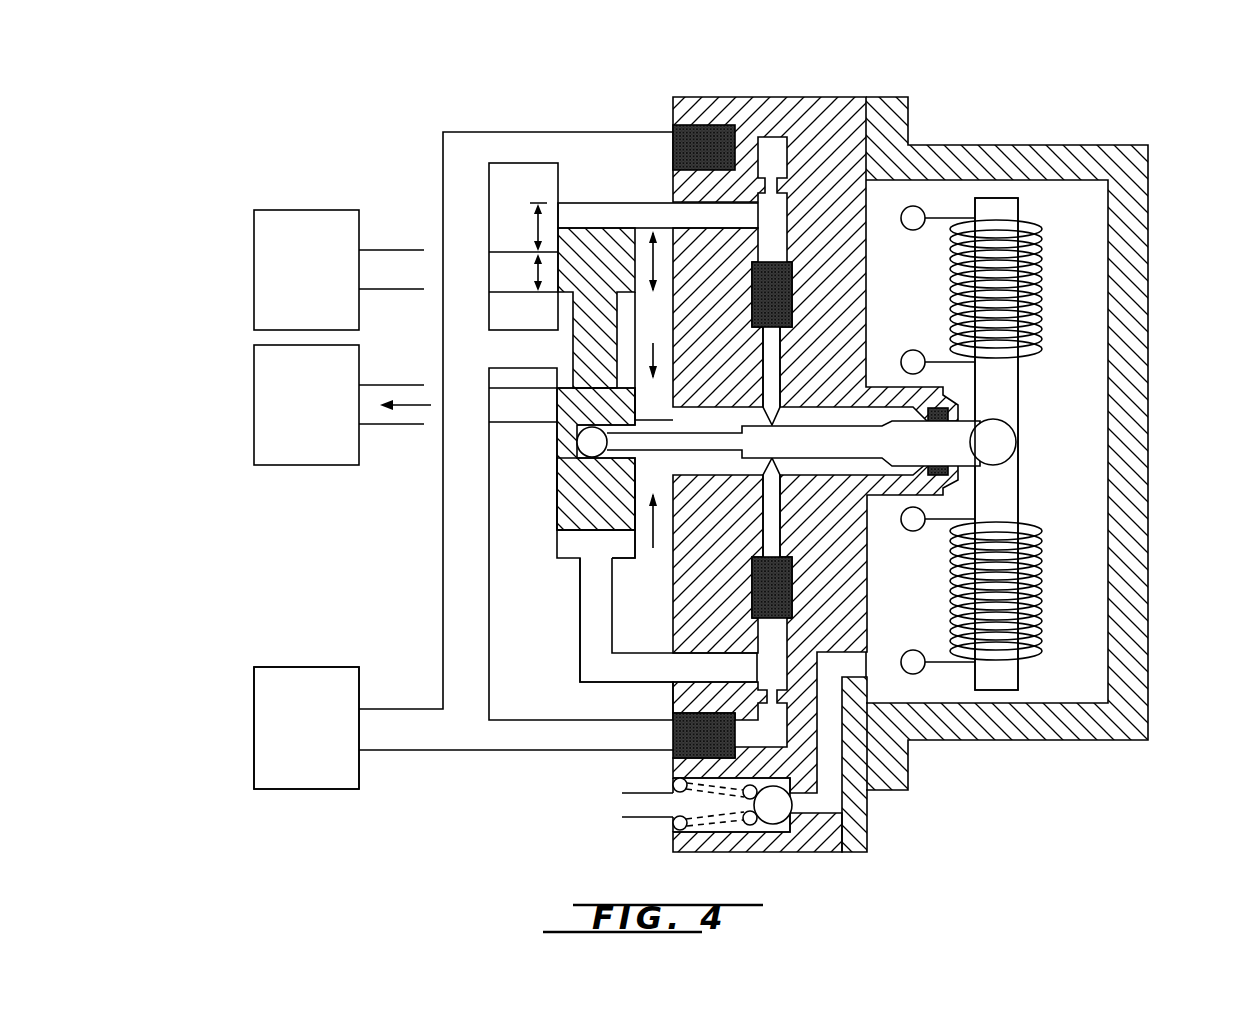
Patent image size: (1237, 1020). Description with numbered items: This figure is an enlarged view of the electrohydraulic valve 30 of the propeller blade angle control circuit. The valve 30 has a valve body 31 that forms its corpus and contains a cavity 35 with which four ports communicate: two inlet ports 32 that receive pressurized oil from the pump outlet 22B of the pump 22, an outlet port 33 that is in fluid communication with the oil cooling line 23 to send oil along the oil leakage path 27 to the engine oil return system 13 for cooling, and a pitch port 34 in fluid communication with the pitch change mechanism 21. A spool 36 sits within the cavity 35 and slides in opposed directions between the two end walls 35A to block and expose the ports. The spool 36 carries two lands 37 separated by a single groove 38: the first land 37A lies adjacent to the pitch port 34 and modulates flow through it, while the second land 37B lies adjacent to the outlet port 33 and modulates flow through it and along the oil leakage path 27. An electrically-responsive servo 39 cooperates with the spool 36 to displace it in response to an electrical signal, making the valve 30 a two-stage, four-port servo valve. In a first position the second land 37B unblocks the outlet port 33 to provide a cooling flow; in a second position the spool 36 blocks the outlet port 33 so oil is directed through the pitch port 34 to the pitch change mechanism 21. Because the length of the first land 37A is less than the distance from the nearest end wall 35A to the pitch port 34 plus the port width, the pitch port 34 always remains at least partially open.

The engine oil return system 13 is at (339, 405).
The pitch change mechanism 21 is at (339, 270).
The pump 22 is at (463, 460).
The pump outlet 22B is at (306, 728).
The oil cooling line 23 is at (380, 385).
The oil leakage path 27 is at (413, 407).
The valve 30 is at (893, 77).
The valve body 31 is at (1008, 145).
The inlet ports 32 is at (662, 120).
The outlet port 33 is at (557, 407).
The pitch port 34 is at (557, 273).
The cavity 35 is at (577, 542).
The end walls 35A is at (585, 201).
The spool 36 is at (597, 480).
The lands 37 is at (492, 506).
The first land 37A is at (600, 258).
The second land 37B is at (558, 522).
The groove 38 is at (617, 340).
The electrically-responsive servo 39 is at (998, 692).